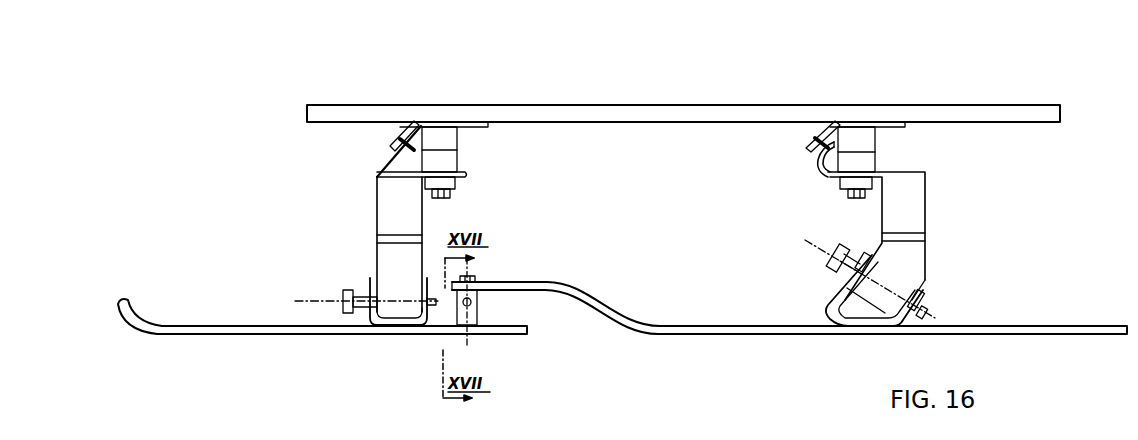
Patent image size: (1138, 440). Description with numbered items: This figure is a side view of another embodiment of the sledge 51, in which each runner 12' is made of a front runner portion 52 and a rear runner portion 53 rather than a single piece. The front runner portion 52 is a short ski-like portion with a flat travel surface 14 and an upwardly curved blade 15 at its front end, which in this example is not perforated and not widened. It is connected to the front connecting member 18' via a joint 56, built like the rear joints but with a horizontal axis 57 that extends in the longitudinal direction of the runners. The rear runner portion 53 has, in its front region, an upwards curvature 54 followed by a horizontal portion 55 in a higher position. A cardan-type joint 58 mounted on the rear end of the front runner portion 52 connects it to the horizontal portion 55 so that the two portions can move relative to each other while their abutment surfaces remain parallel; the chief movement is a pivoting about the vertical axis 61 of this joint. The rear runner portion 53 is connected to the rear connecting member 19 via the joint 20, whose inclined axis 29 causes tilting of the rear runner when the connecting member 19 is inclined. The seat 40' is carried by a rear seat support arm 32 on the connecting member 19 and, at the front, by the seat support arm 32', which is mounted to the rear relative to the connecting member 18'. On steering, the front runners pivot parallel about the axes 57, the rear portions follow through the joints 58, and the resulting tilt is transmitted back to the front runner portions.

The sledge 51 is at (1028, 75).
The seat 40' is at (683, 94).
The runner 12' is at (789, 278).
The horizontal portion 55 is at (497, 282).
The upwards curvature 54 is at (601, 302).
The rear runner portion 53 is at (670, 327).
The cardan-type joint 58 is at (509, 314).
The vertical axis 61 is at (470, 340).
The travel surface 14 is at (322, 327).
The front runner portion 52 is at (228, 327).
The blade 15 is at (128, 303).
The connecting member 18' is at (406, 251).
The seat support arm 32' is at (459, 159).
The joint 56 is at (360, 302).
The axis 57 is at (304, 302).
The connecting member 19 is at (883, 223).
The seat support arm 32 is at (812, 174).
The joint 20 is at (941, 268).
The inclined axis 29 is at (815, 236).